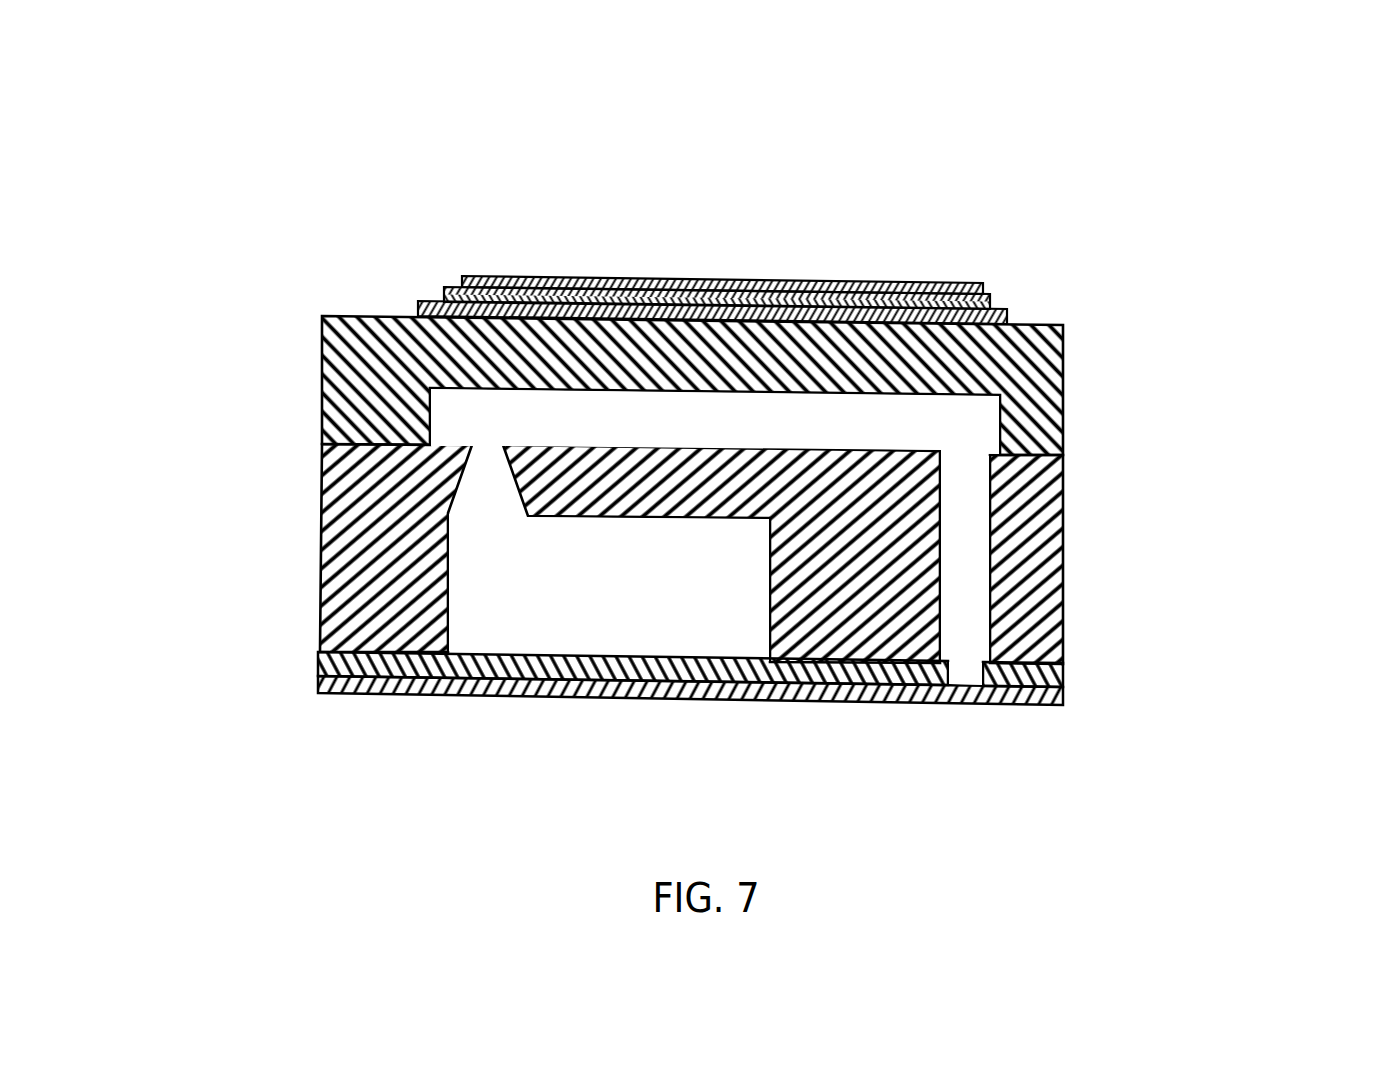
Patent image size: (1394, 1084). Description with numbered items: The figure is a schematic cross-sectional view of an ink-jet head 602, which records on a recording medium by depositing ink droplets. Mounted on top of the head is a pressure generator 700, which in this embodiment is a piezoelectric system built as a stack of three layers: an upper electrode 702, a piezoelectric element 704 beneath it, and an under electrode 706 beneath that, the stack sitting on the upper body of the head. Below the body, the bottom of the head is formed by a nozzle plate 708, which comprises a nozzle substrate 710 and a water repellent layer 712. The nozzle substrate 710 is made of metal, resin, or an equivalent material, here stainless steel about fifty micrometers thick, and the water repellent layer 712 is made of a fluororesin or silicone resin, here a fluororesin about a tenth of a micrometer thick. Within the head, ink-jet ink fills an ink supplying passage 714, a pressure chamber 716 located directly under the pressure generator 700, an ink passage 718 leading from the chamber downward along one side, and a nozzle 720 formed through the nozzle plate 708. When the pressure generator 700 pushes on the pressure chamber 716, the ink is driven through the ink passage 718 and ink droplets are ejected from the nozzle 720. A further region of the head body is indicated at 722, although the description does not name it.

The ink-jet head 602 is at (713, 412).
The pressure generator 700 is at (712, 203).
The upper electrode 702 is at (637, 170).
The piezoelectric element 704 is at (822, 300).
The under electrode 706 is at (727, 310).
The nozzle plate 708 is at (554, 666).
The nozzle substrate 710 is at (315, 667).
The water repellent layer 712 is at (315, 687).
The ink supplying passage 714 is at (600, 582).
The pressure chamber 716 is at (505, 410).
The ink passage 718 is at (975, 530).
The nozzle 720 is at (962, 683).
The body 722 is at (318, 392).